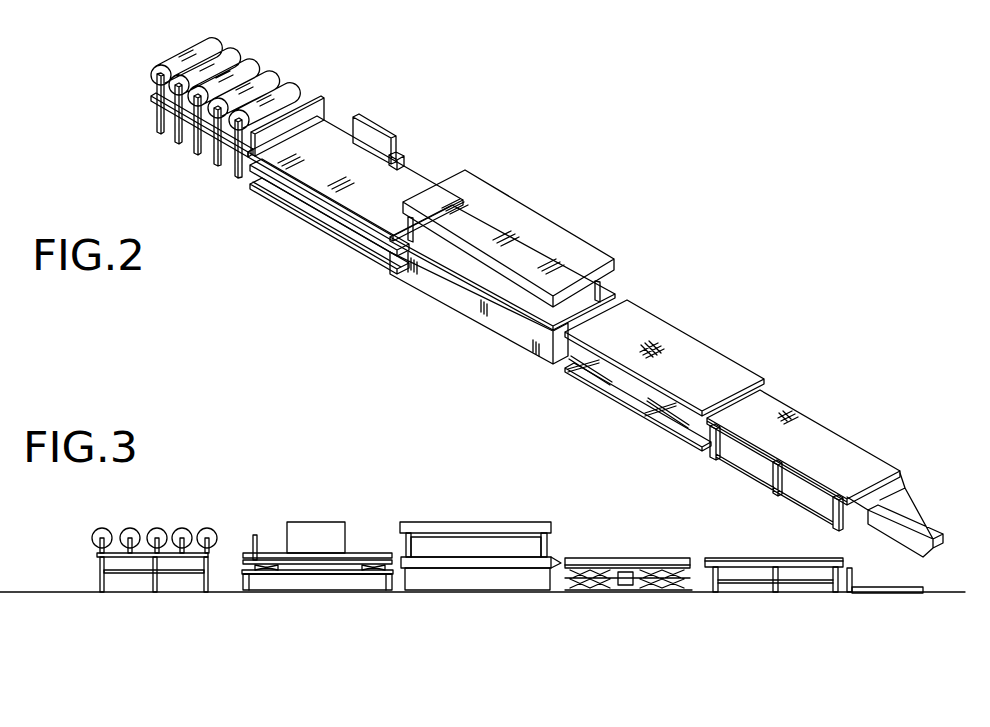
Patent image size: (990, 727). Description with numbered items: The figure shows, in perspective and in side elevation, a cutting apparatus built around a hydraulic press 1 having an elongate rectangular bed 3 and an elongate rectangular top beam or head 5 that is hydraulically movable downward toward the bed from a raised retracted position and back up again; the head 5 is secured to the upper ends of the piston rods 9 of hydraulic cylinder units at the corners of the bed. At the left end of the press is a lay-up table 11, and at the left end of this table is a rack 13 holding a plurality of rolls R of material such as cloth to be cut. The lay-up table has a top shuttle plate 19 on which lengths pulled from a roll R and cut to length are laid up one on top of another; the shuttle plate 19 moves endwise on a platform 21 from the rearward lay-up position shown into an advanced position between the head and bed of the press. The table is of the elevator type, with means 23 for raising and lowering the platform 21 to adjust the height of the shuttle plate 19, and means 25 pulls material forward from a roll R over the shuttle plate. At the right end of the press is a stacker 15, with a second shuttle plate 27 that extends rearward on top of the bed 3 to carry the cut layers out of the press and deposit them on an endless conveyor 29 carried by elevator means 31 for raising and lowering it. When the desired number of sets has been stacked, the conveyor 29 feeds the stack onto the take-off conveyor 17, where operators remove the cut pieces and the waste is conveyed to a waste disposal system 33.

In FIG. 2, the roll of material R is at (182, 56).
In FIG. 3, the roll of material R is at (207, 529).
In FIG. 2, the hydraulic press 1 is at (498, 267).
In FIG. 3, the hydraulic press 1 is at (493, 555).
In FIG. 2, the bed 3 is at (475, 297).
In FIG. 3, the bed 3 is at (483, 585).
In FIG. 2, the top beam or head 5 is at (593, 257).
In FIG. 3, the top beam or head 5 is at (540, 523).
In FIG. 2, the piston rods 9 is at (398, 237).
In FIG. 3, the piston rods 9 is at (404, 548).
In FIG. 2, the lay-up table 11 is at (355, 182).
In FIG. 3, the lay-up table 11 is at (301, 558).
In FIG. 2, the rack 13 is at (200, 160).
In FIG. 3, the rack 13 is at (160, 598).
In FIG. 2, the stacker 15 is at (662, 382).
In FIG. 3, the stacker 15 is at (622, 574).
In FIG. 2, the take-off conveyor 17 is at (848, 422).
In FIG. 3, the take-off conveyor 17 is at (805, 600).
In FIG. 2, the shuttle plate 19 is at (356, 191).
In FIG. 3, the shuttle plate 19 is at (333, 553).
In FIG. 2, the platform 21 is at (363, 221).
In FIG. 3, the platform 21 is at (242, 562).
In FIG. 3, the means for raising and lowering the platform 23 is at (260, 573).
In FIG. 2, the means for pulling material 25 is at (318, 108).
In FIG. 3, the means for pulling material 25 is at (257, 535).
In FIG. 2, the second shuttle plate 27 is at (583, 305).
In FIG. 3, the second shuttle plate 27 is at (476, 547).
In FIG. 2, the endless conveyor 29 is at (718, 372).
In FIG. 3, the endless conveyor 29 is at (647, 558).
In FIG. 2, the elevator means 31 is at (577, 368).
In FIG. 3, the elevator means 31 is at (577, 589).
In FIG. 2, the waste disposal system 33 is at (905, 517).
In FIG. 3, the waste disposal system 33 is at (925, 590).